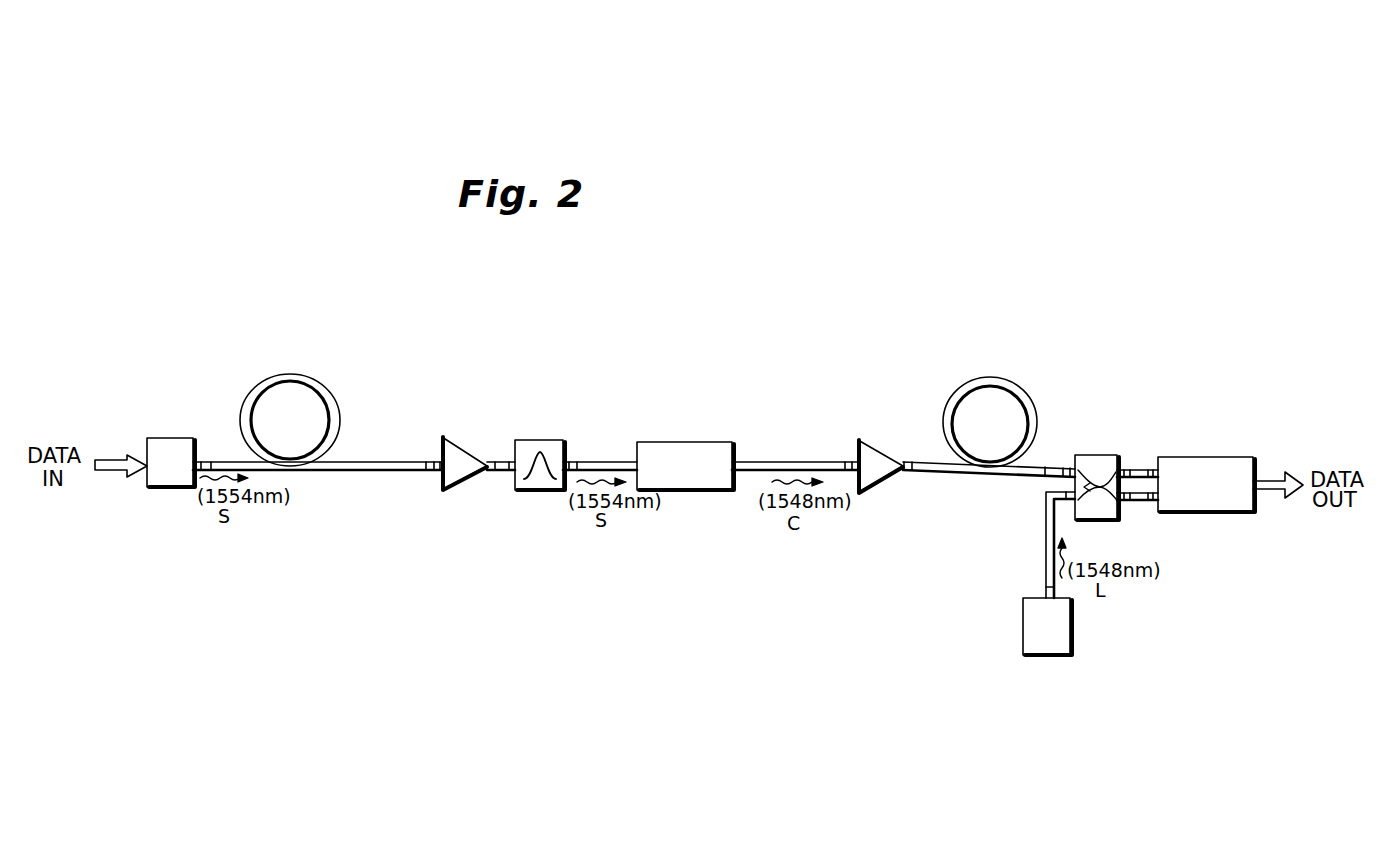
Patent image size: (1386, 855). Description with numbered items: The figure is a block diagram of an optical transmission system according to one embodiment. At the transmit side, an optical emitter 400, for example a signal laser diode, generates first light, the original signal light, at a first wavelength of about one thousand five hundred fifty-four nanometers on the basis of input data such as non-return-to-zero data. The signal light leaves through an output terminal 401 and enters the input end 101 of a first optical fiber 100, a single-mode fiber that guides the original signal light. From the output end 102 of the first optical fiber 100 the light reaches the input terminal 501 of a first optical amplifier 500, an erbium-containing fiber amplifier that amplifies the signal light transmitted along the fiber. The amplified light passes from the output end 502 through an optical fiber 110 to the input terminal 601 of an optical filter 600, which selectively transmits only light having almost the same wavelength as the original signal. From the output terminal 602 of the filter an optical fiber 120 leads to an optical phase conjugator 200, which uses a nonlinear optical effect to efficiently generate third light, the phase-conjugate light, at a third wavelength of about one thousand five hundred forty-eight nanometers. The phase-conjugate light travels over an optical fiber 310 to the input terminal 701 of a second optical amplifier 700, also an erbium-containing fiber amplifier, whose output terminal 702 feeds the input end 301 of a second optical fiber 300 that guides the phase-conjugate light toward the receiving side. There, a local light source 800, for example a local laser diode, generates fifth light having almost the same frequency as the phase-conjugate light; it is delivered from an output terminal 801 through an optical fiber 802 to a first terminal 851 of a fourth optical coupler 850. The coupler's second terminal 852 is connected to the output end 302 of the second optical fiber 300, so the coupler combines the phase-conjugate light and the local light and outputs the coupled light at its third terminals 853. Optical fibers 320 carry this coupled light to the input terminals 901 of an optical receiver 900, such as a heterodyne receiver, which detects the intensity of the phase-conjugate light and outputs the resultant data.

The first optical fiber 100 is at (312, 383).
The input end 101 is at (214, 461).
The output end 102 is at (426, 461).
The optical fiber 110 is at (497, 472).
The optical fiber 120 is at (616, 461).
The optical phase conjugator 200 is at (690, 492).
The second optical fiber 300 is at (1003, 380).
The input end 301 is at (926, 472).
The output end 302 is at (1045, 466).
The optical fiber 310 is at (794, 461).
The output optical fibers to receiver 320 is at (1139, 469).
The optical emitter 400 is at (167, 438).
The output terminal 401 is at (201, 461).
The first optical amplifier 500 is at (445, 493).
The input terminal 501 is at (438, 461).
The output end 502 is at (489, 472).
The optical filter 600 is at (539, 439).
The input terminal 601 is at (510, 472).
The output terminal 602 is at (572, 461).
The second optical amplifier 700 is at (875, 495).
The input terminal 701 is at (848, 461).
The output terminal 702 is at (909, 461).
The local light source 800 is at (1049, 657).
The output terminal 801 is at (1045, 589).
The optical fiber 802 is at (1045, 539).
The fourth optical coupler 850 is at (1093, 454).
The first terminal 851 is at (1066, 491).
The second terminal 852 is at (1066, 467).
The third terminals 853 is at (1126, 469).
The optical receiver 900 is at (1256, 456).
The input terminals 901 is at (1151, 469).